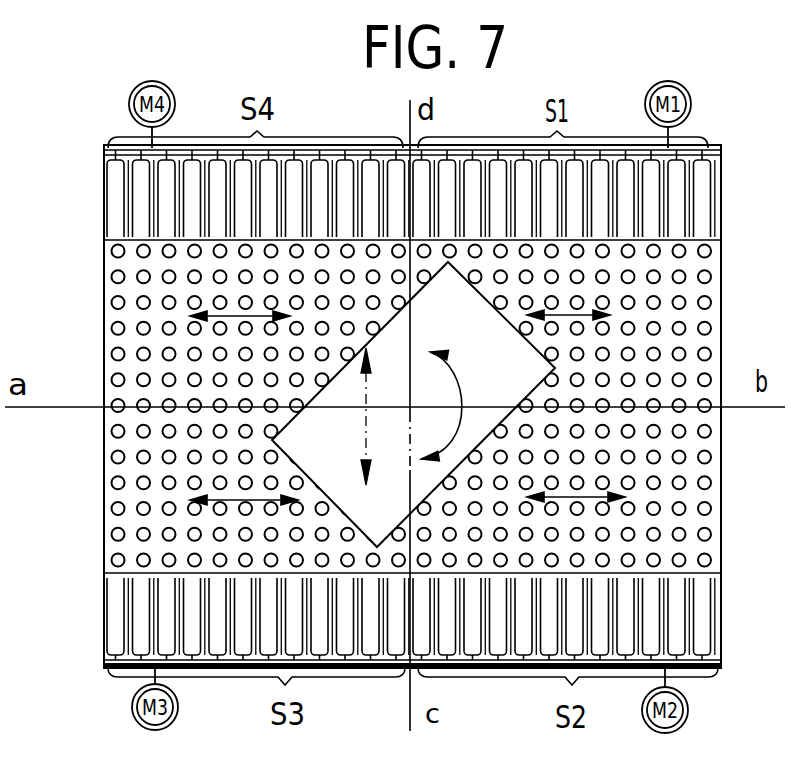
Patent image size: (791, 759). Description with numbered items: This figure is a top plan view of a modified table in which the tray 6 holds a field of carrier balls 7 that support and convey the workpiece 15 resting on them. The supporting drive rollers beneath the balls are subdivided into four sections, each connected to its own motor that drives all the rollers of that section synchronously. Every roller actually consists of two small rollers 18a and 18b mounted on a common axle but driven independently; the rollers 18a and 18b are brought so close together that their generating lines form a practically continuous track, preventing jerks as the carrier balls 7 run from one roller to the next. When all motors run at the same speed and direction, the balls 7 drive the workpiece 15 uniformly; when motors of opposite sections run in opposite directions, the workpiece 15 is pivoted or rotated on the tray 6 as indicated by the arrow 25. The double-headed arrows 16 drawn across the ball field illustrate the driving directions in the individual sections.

The tray 6 is at (112, 312).
The carrier balls 7 is at (143, 437).
The workpiece 15 is at (465, 322).
The displacement direction arrows 16 is at (228, 318).
The roller 18a is at (147, 200).
The roller 18b is at (140, 621).
The arrow 25 is at (467, 393).